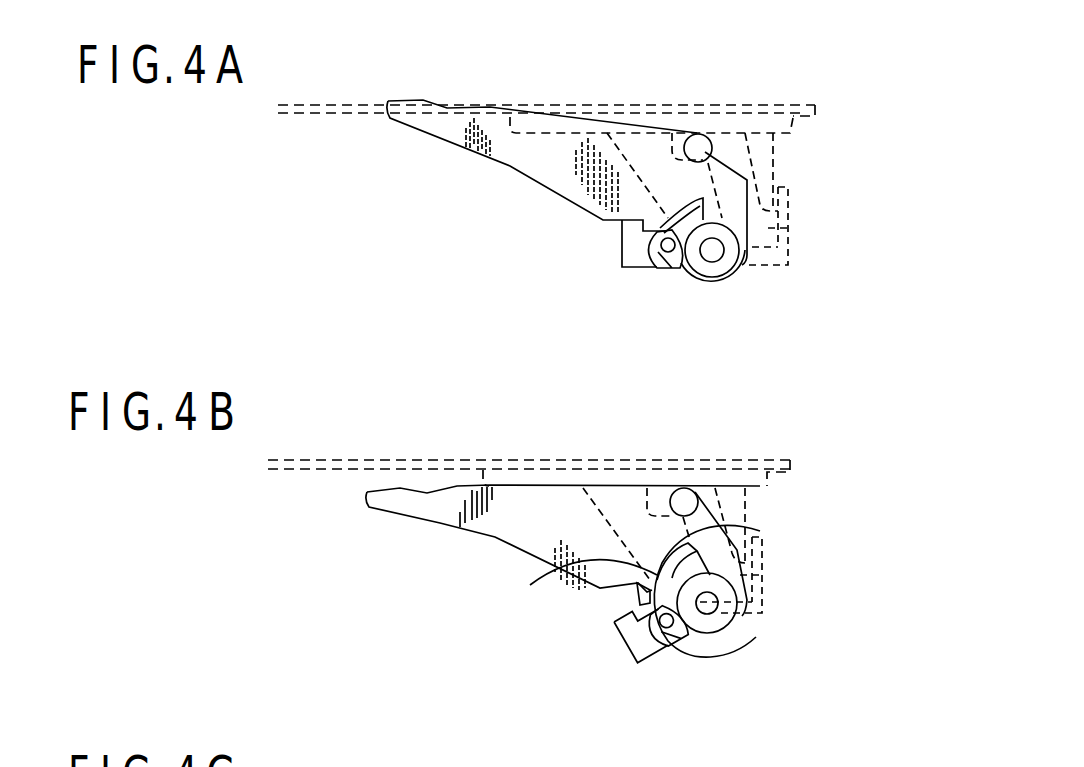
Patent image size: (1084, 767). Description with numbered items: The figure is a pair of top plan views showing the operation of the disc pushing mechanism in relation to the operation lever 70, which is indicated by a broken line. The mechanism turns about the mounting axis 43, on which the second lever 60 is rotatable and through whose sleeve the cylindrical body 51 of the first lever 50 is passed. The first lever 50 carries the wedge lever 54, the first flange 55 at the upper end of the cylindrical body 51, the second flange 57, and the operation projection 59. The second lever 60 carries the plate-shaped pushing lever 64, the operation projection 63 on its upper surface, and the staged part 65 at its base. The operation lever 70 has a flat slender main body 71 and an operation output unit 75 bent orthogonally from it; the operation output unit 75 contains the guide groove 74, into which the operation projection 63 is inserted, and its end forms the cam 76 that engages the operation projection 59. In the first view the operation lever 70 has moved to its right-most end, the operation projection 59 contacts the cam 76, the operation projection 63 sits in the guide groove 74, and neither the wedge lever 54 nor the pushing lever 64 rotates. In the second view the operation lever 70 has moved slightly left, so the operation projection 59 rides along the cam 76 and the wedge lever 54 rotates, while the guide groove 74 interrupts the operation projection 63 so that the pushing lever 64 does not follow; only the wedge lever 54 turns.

In FIG. 4A, the mounting axis 43 is at (713, 252).
In FIG. 4B, the mounting axis 43 is at (720, 612).
In FIG. 4A, the first lever 50 is at (682, 268).
In FIG. 4B, the first lever 50 is at (703, 663).
In FIG. 4A, the cylindrical body 51 is at (740, 280).
In FIG. 4B, the cylindrical body 51 is at (745, 615).
In FIG. 4A, the wedge lever 54 is at (630, 249).
In FIG. 4B, the wedge lever 54 is at (628, 637).
In FIG. 4B, the first flange 55 is at (637, 597).
In FIG. 4B, the second flange 57 is at (532, 585).
In FIG. 4A, the operation projection 59 is at (668, 252).
In FIG. 4B, the operation projection 59 is at (663, 630).
In FIG. 4A, the second lever 60 is at (541, 182).
In FIG. 4B, the second lever 60 is at (543, 550).
In FIG. 4A, the operation projection 63 is at (698, 147).
In FIG. 4B, the operation projection 63 is at (684, 500).
In FIG. 4A, the pushing lever 64 is at (537, 167).
In FIG. 4B, the pushing lever 64 is at (497, 530).
In FIG. 4B, the staged part 65 is at (748, 527).
In FIG. 4A, the operation lever 70 is at (501, 102).
In FIG. 4B, the operation lever 70 is at (797, 463).
In FIG. 4A, the main body 71 is at (382, 107).
In FIG. 4B, the main body 71 is at (392, 458).
In FIG. 4A, the guide groove 74 is at (787, 228).
In FIG. 4B, the guide groove 74 is at (753, 574).
In FIG. 4A, the operation output unit 75 is at (778, 170).
In FIG. 4B, the operation output unit 75 is at (748, 518).
In FIG. 4A, the cam 76 is at (695, 278).
In FIG. 4B, the cam 76 is at (710, 640).